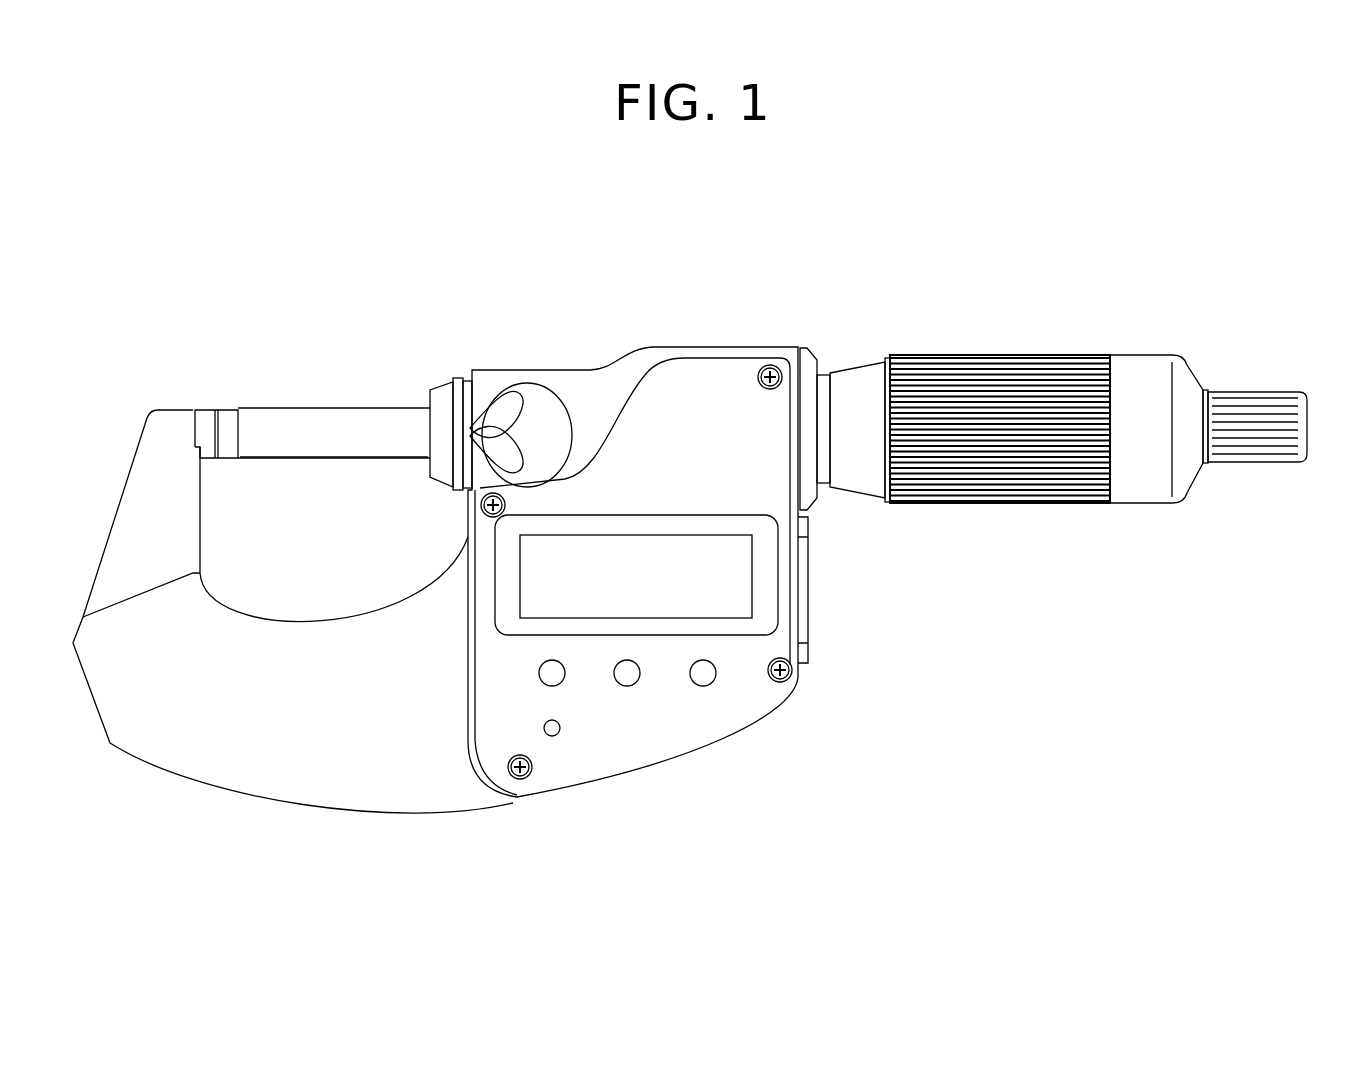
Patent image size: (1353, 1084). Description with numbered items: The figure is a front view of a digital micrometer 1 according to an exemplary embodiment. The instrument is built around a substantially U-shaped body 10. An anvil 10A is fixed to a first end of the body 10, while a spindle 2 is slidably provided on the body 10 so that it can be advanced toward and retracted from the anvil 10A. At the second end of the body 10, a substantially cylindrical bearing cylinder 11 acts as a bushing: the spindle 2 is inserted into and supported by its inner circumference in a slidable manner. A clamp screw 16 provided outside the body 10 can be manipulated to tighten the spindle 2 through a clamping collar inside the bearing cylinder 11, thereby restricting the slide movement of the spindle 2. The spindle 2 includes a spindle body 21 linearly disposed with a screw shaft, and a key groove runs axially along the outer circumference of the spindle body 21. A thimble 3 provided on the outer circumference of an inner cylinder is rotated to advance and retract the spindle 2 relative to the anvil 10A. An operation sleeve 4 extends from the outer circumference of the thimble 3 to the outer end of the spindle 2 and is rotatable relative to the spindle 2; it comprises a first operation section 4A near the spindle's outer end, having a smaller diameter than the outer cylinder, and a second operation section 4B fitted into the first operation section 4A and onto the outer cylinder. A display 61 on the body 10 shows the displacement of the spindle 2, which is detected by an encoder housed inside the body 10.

The digital micrometer 1 is at (355, 200).
The body 10 is at (365, 797).
The anvil 10A is at (207, 408).
The spindle 2 is at (350, 406).
The spindle body 21 is at (290, 450).
The bearing cylinder 11 is at (440, 380).
The clamp screw 16 is at (521, 384).
The thimble 3 is at (858, 364).
The operation sleeve 4 is at (1098, 485).
The first operation section 4A is at (1253, 481).
The second operation section 4B is at (1058, 498).
The display 61 is at (743, 593).